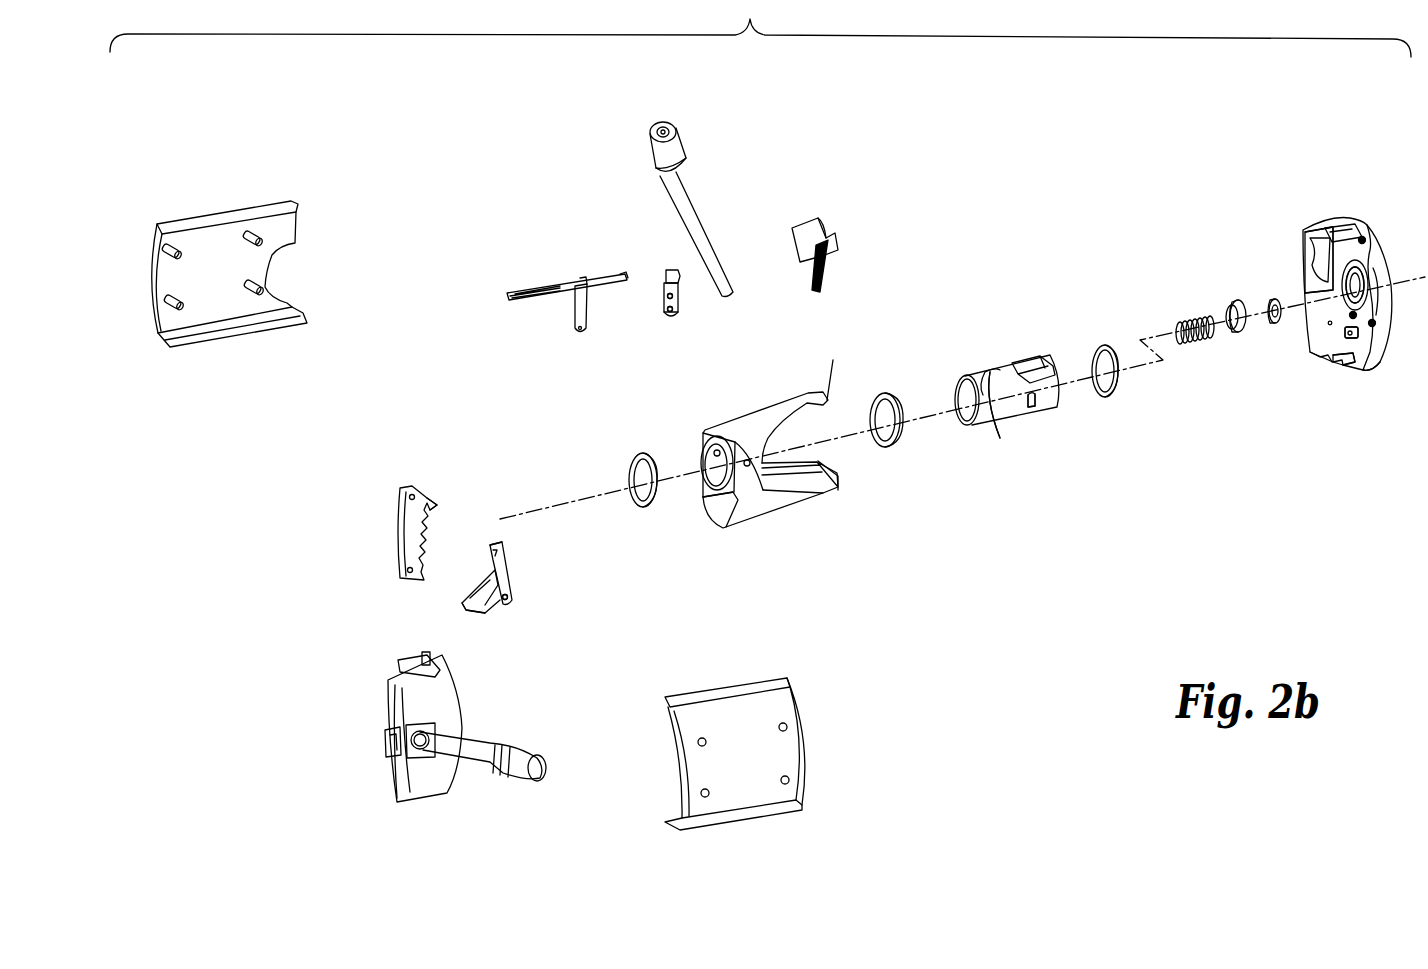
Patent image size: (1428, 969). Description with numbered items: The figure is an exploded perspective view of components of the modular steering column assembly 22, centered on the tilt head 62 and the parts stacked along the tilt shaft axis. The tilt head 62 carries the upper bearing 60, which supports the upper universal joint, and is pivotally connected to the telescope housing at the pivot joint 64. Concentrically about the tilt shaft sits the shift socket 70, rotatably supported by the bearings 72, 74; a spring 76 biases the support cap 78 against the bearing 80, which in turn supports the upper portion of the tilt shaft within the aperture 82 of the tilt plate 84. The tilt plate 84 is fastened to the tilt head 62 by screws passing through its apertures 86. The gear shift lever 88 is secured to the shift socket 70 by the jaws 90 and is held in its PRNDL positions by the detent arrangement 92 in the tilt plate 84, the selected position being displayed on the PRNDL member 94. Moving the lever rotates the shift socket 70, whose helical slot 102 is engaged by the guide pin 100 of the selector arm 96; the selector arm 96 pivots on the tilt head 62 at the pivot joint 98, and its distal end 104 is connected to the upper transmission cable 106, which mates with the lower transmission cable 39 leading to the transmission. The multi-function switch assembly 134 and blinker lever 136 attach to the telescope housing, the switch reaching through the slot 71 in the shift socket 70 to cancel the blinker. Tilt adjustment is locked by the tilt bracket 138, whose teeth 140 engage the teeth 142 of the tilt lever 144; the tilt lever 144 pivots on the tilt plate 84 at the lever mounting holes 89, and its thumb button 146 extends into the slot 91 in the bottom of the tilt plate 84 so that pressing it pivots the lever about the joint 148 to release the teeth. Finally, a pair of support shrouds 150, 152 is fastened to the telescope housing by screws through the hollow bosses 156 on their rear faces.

The modular steering column assembly 22 is at (1124, 214).
The lower transmission cable 39 is at (517, 290).
The upper bearing 60 is at (638, 457).
The tilt head 62 is at (737, 486).
The pivot joint 64 is at (749, 467).
The shift socket 70 is at (993, 348).
The slot 71 is at (1040, 408).
The bearing 72 is at (888, 392).
The bearing 74 is at (1107, 345).
The spring 76 is at (1189, 320).
The support cap 78 is at (1236, 300).
The bearing 80 is at (1274, 299).
The aperture 82 is at (1348, 312).
The tilt plate 84 is at (1338, 207).
The apertures 86 is at (1375, 362).
The gear shift lever 88 is at (699, 215).
The lever mounting holes 89 is at (1347, 338).
The jaws 90 is at (839, 481).
The slot 91 is at (1348, 370).
The detent arrangement 92 is at (1352, 293).
The PRNDL member 94 is at (822, 234).
The selector arm 96 is at (671, 335).
The pivot joint 98 is at (677, 314).
The guide pin 100 is at (679, 296).
The helical slot 102 is at (1000, 438).
The distal end 104 is at (664, 270).
The upper transmission cable 106 is at (612, 276).
The multi-function switch assembly 134 is at (366, 760).
The blinker lever 136 is at (423, 741).
The tilt bracket 138 is at (392, 558).
The teeth 140 is at (437, 507).
The teeth 142 is at (493, 550).
The tilt lever 144 is at (525, 570).
The thumb button 146 is at (478, 613).
The joint 148 is at (511, 600).
The support shroud 150 is at (250, 208).
The support shroud 152 is at (793, 810).
The hollow bosses 156 is at (182, 310).